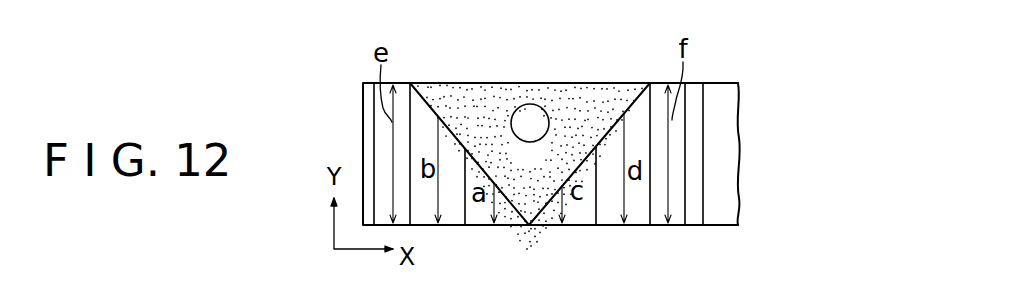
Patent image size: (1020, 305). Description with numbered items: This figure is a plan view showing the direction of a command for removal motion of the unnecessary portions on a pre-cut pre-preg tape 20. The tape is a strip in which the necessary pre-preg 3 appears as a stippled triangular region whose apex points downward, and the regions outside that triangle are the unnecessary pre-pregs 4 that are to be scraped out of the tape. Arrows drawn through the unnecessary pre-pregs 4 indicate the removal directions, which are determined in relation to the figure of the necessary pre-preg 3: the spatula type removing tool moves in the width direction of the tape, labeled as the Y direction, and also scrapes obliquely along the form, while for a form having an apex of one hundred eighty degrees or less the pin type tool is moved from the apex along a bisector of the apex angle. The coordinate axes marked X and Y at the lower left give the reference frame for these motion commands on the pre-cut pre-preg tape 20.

The pre-cut pre-preg tape 20 is at (563, 73).
The necessary pre-preg 3 is at (473, 100).
The unnecessary pre-preg 4 is at (515, 227).